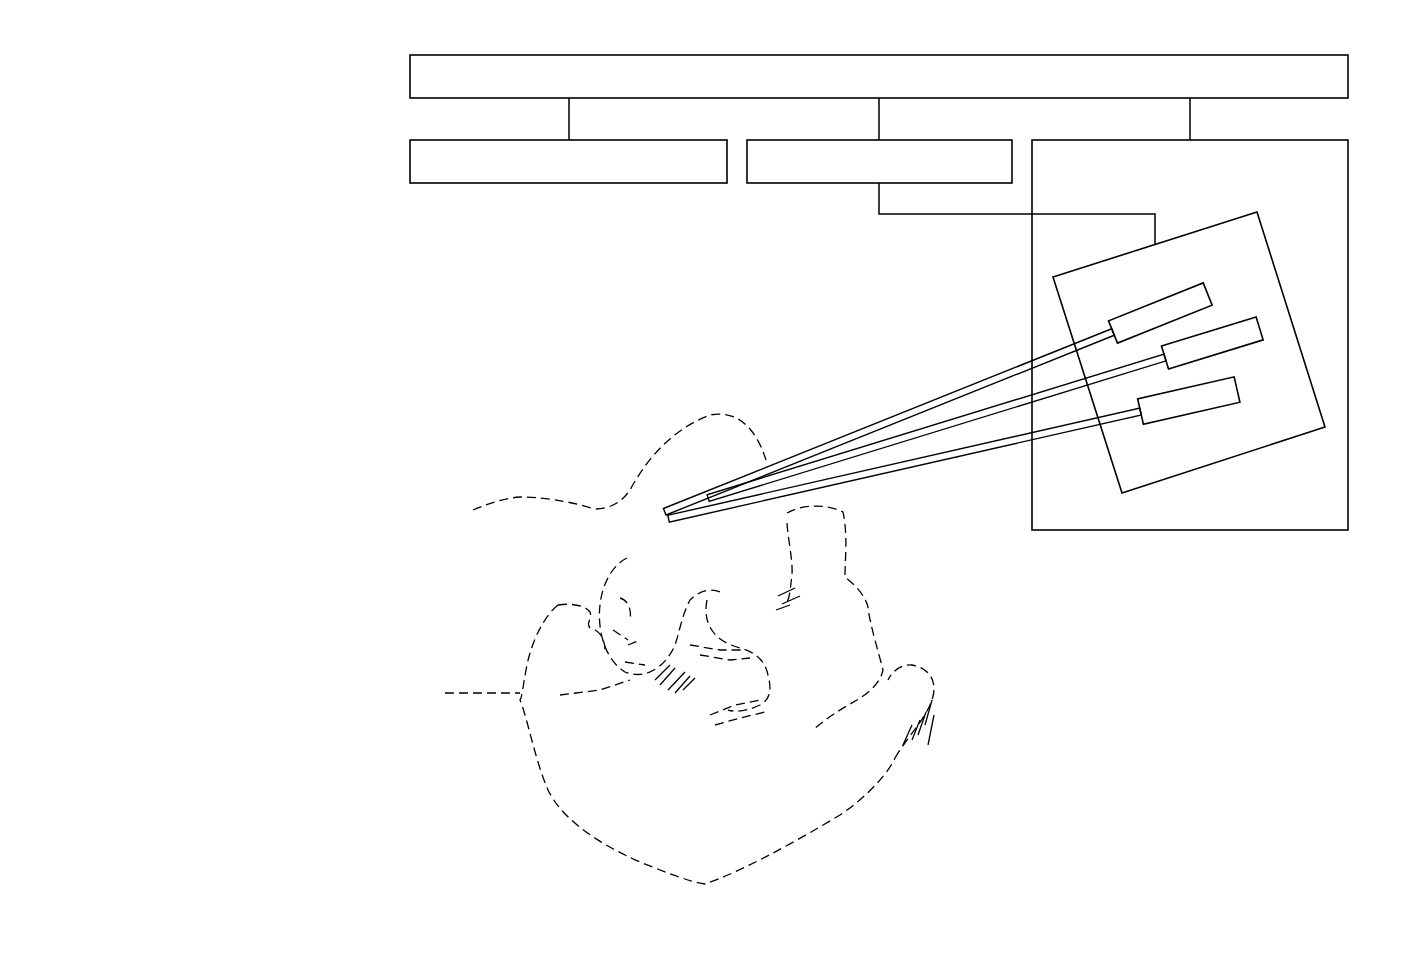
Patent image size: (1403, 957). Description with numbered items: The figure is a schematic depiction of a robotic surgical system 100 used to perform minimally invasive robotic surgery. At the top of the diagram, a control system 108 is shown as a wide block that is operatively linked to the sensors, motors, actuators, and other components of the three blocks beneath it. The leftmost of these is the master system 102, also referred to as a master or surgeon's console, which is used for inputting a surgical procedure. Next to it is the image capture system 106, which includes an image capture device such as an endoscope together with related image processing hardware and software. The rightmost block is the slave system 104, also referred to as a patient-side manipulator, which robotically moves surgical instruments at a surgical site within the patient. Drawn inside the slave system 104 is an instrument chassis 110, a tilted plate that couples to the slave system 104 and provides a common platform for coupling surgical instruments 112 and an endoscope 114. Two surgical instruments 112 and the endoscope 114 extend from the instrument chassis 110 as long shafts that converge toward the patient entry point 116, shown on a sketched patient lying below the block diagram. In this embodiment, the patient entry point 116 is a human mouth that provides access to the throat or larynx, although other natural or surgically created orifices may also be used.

The robotic surgical system 100 is at (282, 229).
The master system 102 is at (545, 183).
The slave system 104 is at (1190, 531).
The image capture system 106 is at (792, 183).
The control system 108 is at (410, 77).
The instrument chassis 110 is at (1225, 465).
The surgical instruments 112 is at (1210, 297).
The endoscope 114 is at (1256, 345).
The patient entry point 116 is at (760, 466).